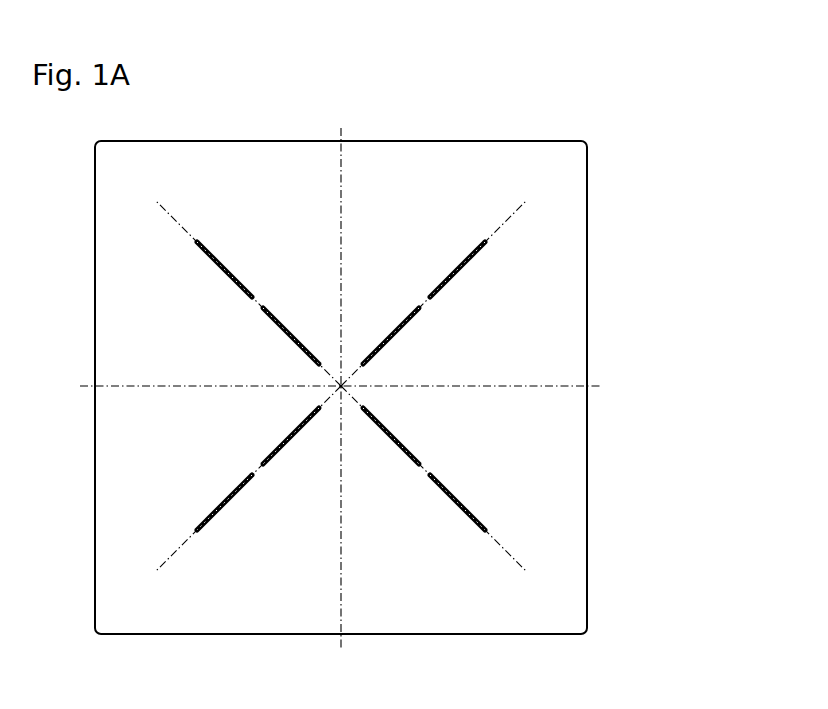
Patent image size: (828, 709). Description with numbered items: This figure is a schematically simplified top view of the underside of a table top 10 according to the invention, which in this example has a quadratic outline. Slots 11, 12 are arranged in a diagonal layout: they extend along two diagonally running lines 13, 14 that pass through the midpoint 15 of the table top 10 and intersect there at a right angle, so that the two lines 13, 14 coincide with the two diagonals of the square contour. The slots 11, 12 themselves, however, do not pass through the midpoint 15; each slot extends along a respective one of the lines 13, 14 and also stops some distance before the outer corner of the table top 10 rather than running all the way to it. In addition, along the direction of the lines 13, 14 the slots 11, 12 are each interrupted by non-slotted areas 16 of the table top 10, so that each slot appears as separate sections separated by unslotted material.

The table top 10 is at (410, 387).
The slot 11 is at (461, 246).
The slot 12 is at (577, 259).
The diagonally running line 13 is at (544, 305).
The diagonally running line 14 is at (494, 322).
The midpoint 15 is at (402, 389).
The non-slotted area 16 is at (544, 430).